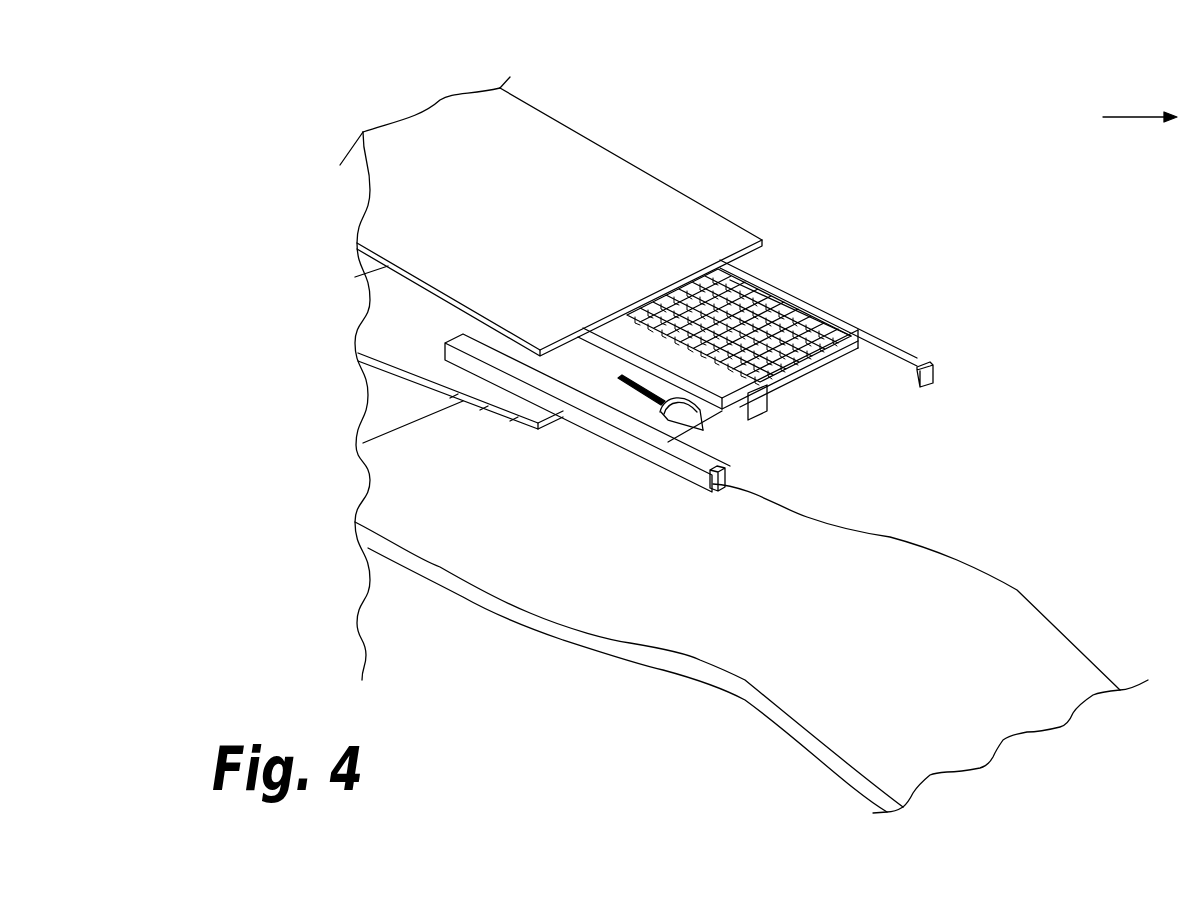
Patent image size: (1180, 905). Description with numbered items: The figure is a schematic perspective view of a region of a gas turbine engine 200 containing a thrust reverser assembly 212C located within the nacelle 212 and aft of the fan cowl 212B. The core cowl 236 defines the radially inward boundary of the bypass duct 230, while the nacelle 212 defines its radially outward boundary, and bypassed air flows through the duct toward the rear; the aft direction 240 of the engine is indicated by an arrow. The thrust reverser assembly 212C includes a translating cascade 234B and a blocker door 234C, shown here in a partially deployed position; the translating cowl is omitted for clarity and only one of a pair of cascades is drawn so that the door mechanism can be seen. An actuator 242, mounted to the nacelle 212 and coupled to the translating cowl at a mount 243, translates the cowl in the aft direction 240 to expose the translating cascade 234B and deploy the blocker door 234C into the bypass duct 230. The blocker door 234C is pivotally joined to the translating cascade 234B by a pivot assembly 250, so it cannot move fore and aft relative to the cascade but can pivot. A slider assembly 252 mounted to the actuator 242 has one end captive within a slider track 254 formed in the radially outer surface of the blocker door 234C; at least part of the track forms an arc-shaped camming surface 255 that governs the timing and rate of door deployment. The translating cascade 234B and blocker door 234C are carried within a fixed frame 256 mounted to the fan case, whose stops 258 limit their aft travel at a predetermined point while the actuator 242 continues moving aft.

The gas turbine engine 200 is at (744, 450).
The nacelle 212 is at (672, 285).
The fan cowl 212B is at (545, 82).
The thrust reverser assembly 212C is at (716, 315).
The bypass duct 230 is at (418, 411).
The translating cascade 234B is at (747, 273).
The blocker door 234C is at (747, 372).
The core cowl 236 is at (1017, 592).
The aft direction 240 is at (1140, 118).
The actuator 242 is at (798, 292).
The mount 243 is at (757, 414).
The pivot assembly 250 is at (858, 350).
The slider assembly 252 is at (622, 377).
The slider track 254 is at (657, 410).
The camming surface 255 is at (727, 403).
The fixed frame 256 is at (716, 392).
The stop 258 is at (920, 388).